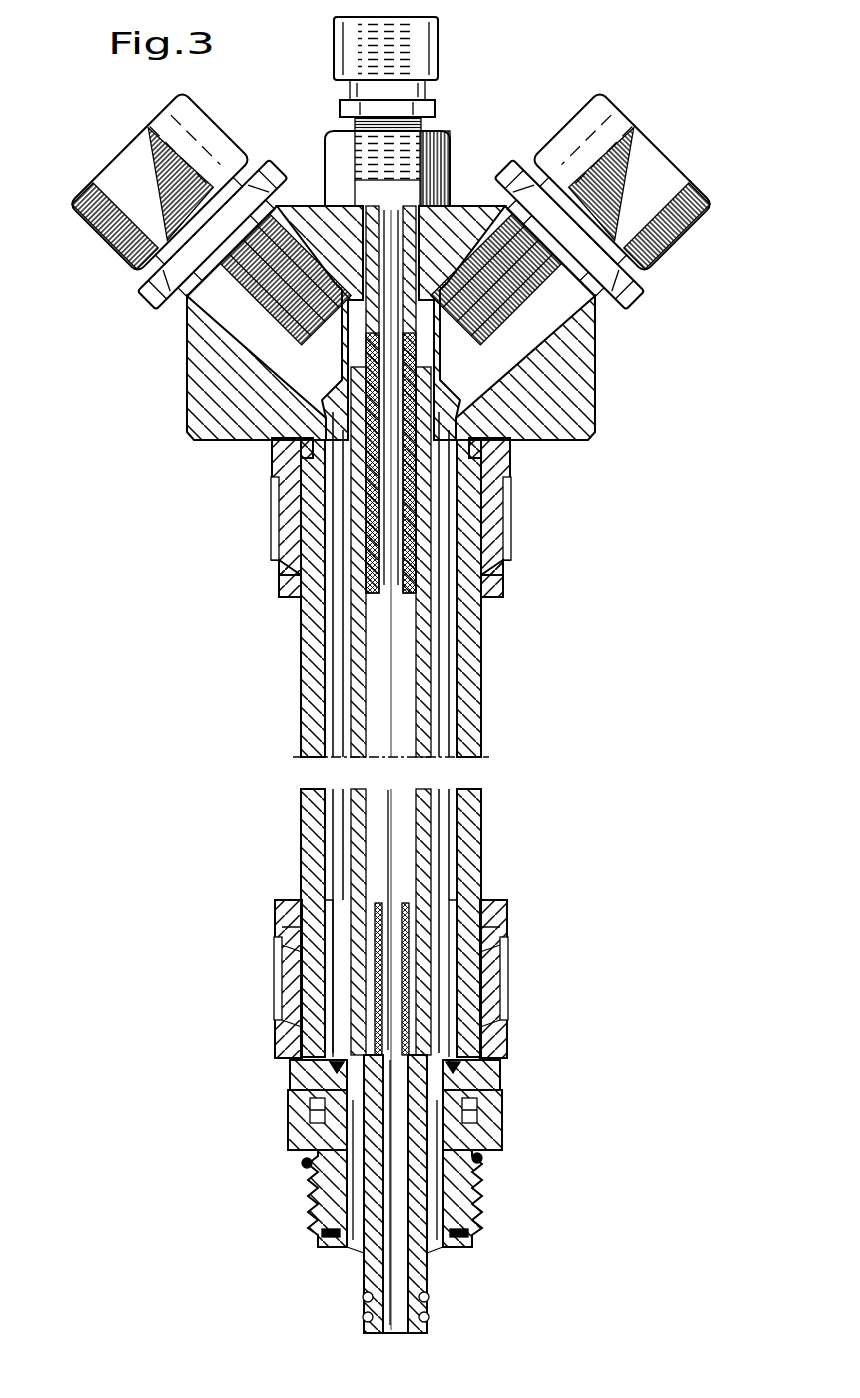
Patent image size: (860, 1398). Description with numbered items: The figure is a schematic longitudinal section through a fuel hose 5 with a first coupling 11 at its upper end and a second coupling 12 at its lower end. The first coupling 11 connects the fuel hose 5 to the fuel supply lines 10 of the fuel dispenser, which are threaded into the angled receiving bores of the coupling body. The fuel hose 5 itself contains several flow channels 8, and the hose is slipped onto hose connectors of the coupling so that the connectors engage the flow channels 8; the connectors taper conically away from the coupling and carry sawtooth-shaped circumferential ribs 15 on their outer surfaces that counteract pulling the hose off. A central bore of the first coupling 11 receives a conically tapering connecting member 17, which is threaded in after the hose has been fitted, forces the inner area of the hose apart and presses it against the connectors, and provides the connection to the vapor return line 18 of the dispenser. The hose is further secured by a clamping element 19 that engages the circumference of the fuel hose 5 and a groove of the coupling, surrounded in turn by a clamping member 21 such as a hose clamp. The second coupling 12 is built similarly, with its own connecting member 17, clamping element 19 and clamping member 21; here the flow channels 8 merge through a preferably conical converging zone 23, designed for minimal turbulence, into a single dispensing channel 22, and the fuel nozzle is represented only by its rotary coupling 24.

The fuel hose 5 is at (483, 718).
The flow channels 8 is at (447, 638).
The fuel supply lines 10 is at (72, 199).
The first coupling 11 is at (583, 391).
The second coupling 12 is at (493, 1060).
The circumferential ribs 15 is at (275, 573).
The connecting member 17 is at (451, 175).
The vapor return line 18 is at (428, 50).
The clamping element 19 is at (290, 448).
The clamping member 21 is at (272, 522).
The dispensing channel 22 is at (363, 1193).
The converging zone 23 is at (337, 1067).
The rotary coupling 24 is at (485, 1130).